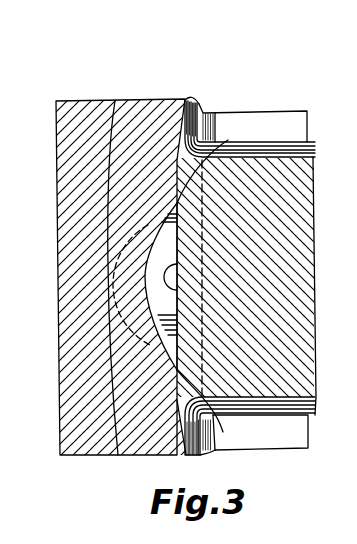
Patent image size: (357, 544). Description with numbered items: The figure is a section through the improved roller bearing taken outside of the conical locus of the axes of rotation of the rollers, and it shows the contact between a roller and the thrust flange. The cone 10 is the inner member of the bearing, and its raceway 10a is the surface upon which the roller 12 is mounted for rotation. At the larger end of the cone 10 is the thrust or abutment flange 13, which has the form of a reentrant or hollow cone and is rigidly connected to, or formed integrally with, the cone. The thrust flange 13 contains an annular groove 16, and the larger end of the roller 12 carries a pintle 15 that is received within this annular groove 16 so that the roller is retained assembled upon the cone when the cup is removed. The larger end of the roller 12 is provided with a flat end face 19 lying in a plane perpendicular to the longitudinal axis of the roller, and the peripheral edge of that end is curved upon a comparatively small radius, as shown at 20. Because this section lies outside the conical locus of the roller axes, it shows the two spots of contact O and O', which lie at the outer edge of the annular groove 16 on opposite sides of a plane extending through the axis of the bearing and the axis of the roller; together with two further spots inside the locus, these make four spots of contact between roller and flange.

The thrust flange 13 is at (146, 112).
The curved peripheral edge 20 is at (189, 112).
The cone 10 is at (264, 113).
The spot of contact O is at (187, 245).
The roller 12 is at (303, 193).
The flat end face 19 is at (177, 250).
The pintle 15 is at (166, 287).
The annular groove 16 is at (108, 377).
The spot of contact O' is at (208, 406).
The raceway of the cone 10a is at (292, 438).